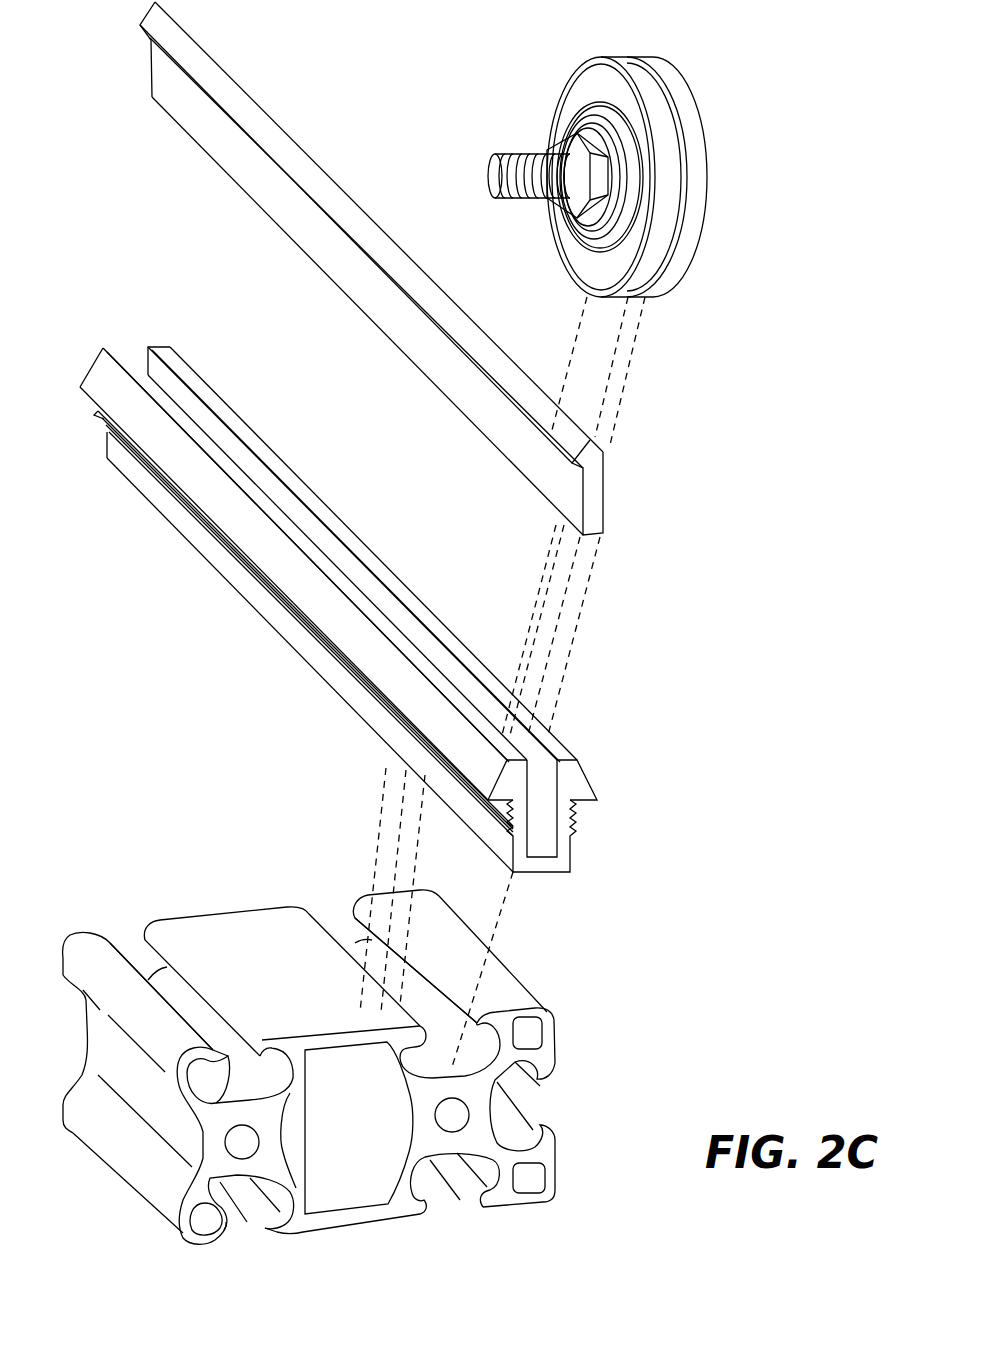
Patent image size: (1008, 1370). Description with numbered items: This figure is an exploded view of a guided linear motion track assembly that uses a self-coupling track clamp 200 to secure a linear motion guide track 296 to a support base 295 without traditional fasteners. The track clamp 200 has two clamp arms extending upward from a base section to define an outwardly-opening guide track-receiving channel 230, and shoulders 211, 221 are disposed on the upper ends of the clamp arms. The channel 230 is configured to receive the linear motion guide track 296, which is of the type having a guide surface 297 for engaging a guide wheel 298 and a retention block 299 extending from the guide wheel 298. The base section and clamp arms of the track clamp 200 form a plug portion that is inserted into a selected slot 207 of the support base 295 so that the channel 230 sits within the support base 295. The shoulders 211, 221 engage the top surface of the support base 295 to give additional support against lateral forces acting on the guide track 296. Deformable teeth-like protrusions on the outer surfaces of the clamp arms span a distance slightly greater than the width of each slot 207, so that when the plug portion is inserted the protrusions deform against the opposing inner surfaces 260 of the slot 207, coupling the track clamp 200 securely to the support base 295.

The self-coupling track clamp 200 is at (570, 855).
The slot 207 is at (135, 955).
The shoulder 211 is at (495, 822).
The shoulder 221 is at (588, 780).
The guide track-receiving channel 230 is at (540, 792).
The inner surface of slot 260 is at (413, 997).
The support base 295 is at (553, 1044).
The linear motion guide track 296 is at (605, 492).
The guide surface 297 is at (202, 40).
The guide wheel 298 is at (708, 178).
The retention block 299 is at (283, 202).